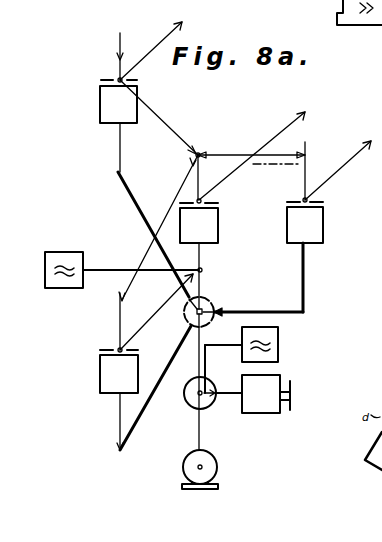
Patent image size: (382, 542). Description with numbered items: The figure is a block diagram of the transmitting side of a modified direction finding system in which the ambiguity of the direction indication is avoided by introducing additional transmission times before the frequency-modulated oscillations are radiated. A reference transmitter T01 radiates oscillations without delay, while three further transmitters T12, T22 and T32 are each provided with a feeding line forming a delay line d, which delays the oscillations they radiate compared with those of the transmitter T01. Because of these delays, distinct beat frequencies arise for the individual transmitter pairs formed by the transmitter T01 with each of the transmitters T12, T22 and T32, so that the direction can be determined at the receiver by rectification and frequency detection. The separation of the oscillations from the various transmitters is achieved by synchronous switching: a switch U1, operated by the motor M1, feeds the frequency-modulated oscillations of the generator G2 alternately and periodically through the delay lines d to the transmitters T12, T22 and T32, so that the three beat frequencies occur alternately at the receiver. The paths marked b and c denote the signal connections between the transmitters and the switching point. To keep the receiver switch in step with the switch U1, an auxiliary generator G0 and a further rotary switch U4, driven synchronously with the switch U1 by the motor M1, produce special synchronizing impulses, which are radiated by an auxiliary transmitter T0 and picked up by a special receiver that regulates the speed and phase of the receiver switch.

The transmitter T32 is at (99, 101).
The signal path b is at (212, 215).
The signal c is at (276, 157).
The delay line d is at (134, 202).
The transmitter T01 is at (219, 228).
The transmitter T12 is at (324, 230).
The generator G2 is at (69, 252).
The switch U1 is at (203, 305).
The transmitter T22 is at (100, 380).
The auxiliary generator G0 is at (279, 345).
The rotary switch U4 is at (185, 401).
The auxiliary transmitter T0 is at (256, 413).
The motor M1 is at (189, 452).